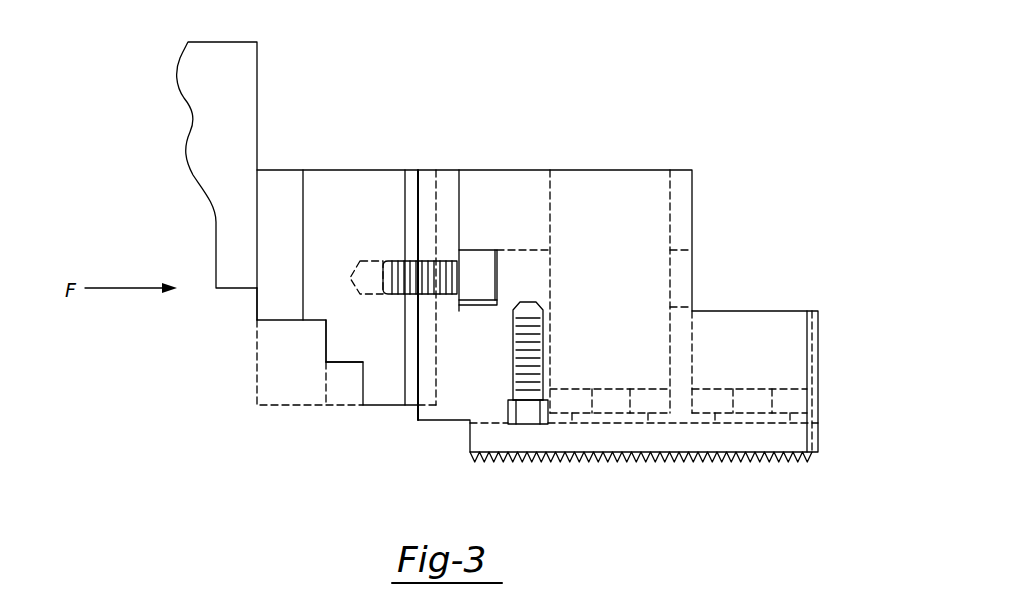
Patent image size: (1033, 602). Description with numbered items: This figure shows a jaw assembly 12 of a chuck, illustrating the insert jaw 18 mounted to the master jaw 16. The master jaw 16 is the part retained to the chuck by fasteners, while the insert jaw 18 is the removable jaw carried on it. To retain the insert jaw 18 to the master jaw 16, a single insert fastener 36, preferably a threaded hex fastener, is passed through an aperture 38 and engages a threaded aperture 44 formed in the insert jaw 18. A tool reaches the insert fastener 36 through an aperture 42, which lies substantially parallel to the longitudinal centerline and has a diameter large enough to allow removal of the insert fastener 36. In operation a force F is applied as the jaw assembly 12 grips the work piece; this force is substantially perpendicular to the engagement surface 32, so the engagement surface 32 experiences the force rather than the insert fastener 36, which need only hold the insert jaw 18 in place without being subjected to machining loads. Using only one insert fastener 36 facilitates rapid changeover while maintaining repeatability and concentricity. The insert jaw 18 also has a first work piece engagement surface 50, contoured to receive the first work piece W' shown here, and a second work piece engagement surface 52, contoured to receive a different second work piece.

The first work piece W' is at (251, 151).
The jaw assembly 12 is at (776, 254).
The master jaw 16 is at (586, 170).
The insert jaw 18 is at (333, 170).
The engagement surface 32 is at (435, 188).
The insert fastener 36 is at (497, 265).
The aperture 38 is at (446, 300).
The aperture 42 is at (438, 178).
The threaded aperture 44 is at (370, 261).
The first work piece engagement surface 50 is at (249, 305).
The second work piece engagement surface 52 is at (355, 391).